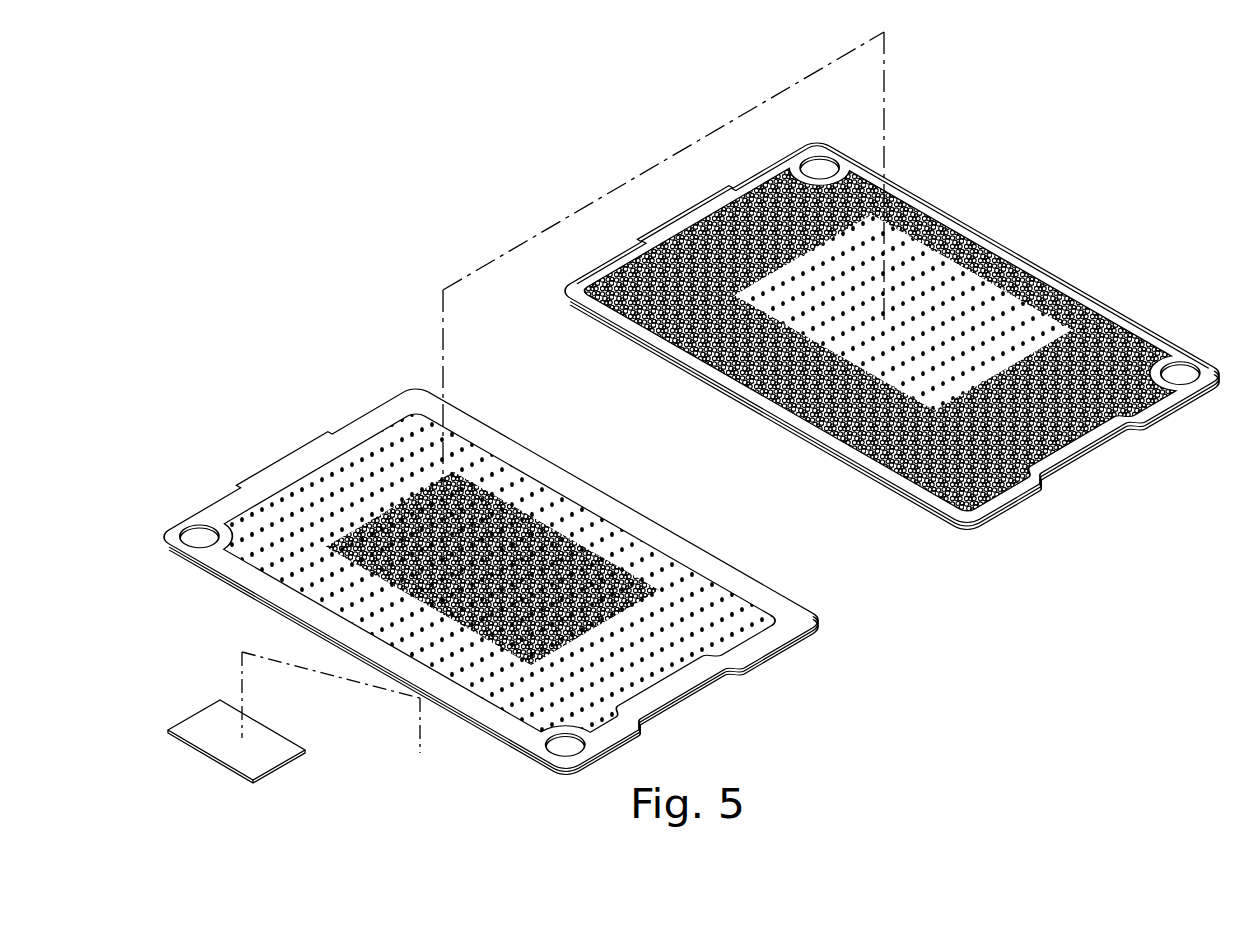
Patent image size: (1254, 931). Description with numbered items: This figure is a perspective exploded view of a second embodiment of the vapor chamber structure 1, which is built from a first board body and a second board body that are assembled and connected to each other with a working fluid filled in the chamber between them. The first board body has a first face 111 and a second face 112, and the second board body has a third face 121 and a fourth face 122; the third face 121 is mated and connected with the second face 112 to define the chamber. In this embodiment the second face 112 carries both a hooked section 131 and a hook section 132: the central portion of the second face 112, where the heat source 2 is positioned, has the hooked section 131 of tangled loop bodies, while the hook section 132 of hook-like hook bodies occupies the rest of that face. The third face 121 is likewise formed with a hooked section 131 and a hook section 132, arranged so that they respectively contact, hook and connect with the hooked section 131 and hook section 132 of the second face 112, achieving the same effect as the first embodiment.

The vapor chamber structure 1 is at (1108, 170).
The heat source 2 is at (212, 738).
The first face 111 is at (692, 677).
The second face 112 is at (733, 610).
The third face 121 is at (1133, 402).
The fourth face 122 is at (1007, 518).
The hooked section 131 is at (638, 315).
The hook section 132 is at (410, 410).